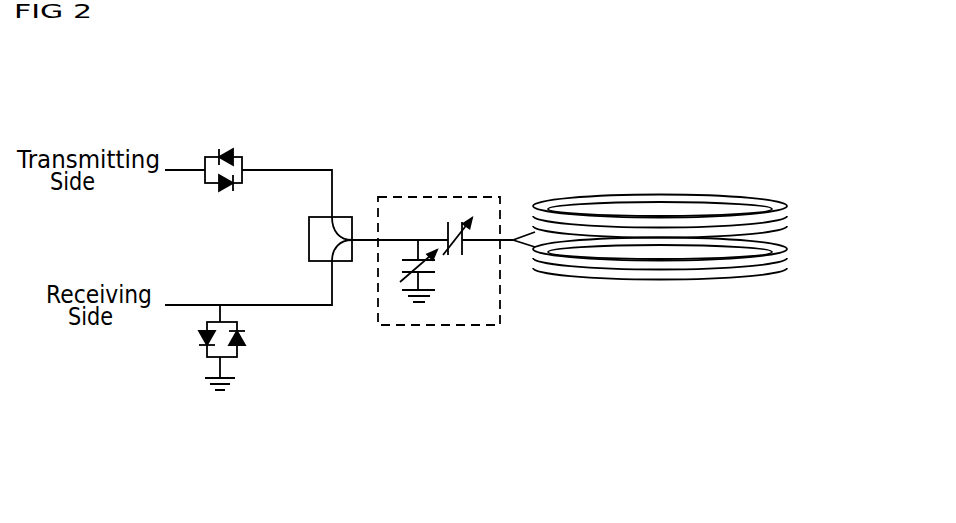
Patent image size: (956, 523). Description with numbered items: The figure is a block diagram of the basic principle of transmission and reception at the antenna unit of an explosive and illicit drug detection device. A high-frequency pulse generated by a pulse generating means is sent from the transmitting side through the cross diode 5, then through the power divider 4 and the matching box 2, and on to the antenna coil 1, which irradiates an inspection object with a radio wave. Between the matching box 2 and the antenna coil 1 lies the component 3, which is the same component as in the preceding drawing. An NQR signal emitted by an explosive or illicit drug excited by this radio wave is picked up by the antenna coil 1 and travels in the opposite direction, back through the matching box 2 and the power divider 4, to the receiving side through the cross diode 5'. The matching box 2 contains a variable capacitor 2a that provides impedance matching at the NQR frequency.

The antenna coil 1 is at (665, 192).
The matching box 2 is at (428, 209).
The variable capacitor 2a is at (455, 258).
The component 3 is at (508, 242).
The power divider 4 is at (308, 239).
The cross diode 5 is at (206, 128).
The cross diode 5' is at (260, 372).